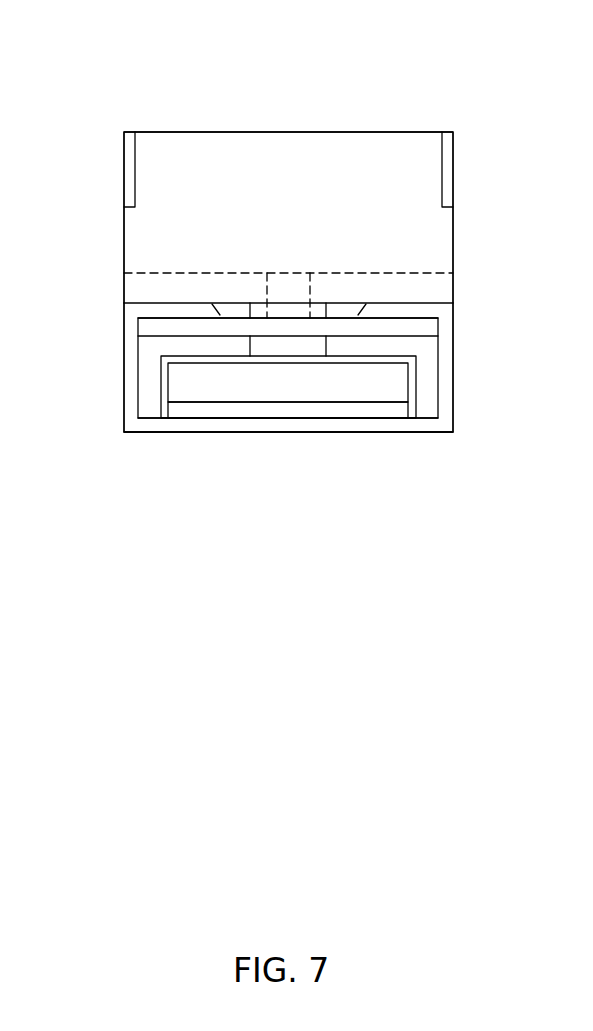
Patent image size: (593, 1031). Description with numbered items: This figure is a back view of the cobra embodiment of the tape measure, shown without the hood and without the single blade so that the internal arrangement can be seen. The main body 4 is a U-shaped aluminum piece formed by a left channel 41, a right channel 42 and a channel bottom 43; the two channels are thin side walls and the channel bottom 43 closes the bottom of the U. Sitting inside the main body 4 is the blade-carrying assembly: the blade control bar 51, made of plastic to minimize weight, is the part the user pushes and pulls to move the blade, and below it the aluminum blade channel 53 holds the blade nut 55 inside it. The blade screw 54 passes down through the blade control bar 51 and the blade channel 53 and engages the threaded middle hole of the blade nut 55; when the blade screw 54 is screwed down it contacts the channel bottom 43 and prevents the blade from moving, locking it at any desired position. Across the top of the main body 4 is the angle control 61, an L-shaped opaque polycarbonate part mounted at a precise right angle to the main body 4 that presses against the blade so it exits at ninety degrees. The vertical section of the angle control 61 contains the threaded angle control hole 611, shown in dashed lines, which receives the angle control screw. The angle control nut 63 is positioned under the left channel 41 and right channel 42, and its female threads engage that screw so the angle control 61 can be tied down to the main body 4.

The main body 4 is at (474, 452).
The left channel 41 is at (447, 363).
The right channel 42 is at (128, 363).
The channel bottom 43 is at (232, 425).
The blade control bar 51 is at (266, 346).
The blade channel 53 is at (162, 405).
The blade screw 54 is at (304, 311).
The blade nut 55 is at (390, 395).
The angle control 61 is at (250, 152).
The angle control hole 611 is at (280, 285).
The angle control nut 63 is at (148, 327).